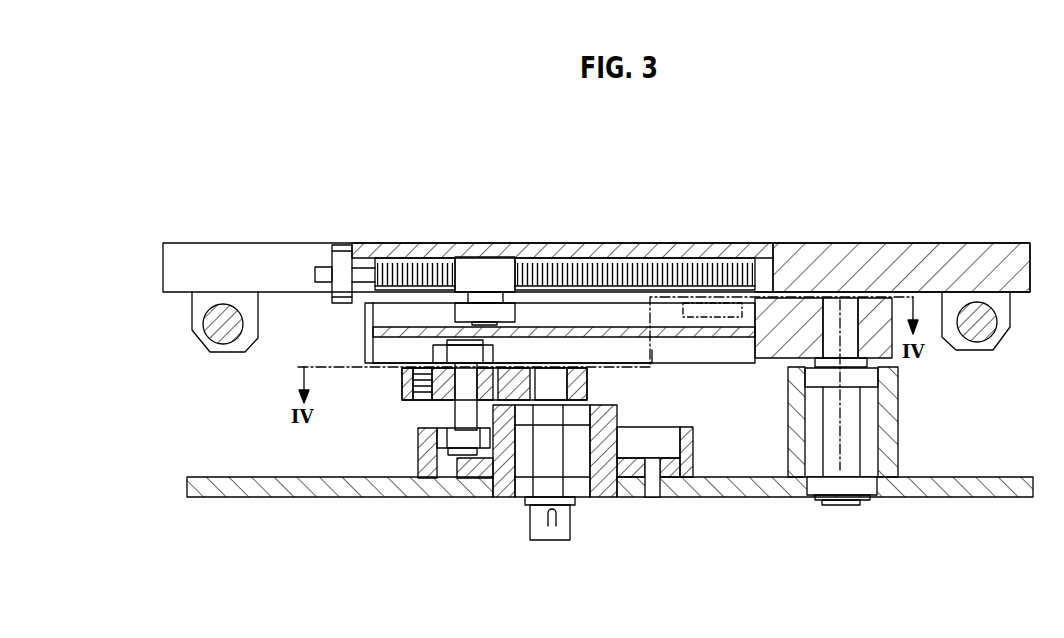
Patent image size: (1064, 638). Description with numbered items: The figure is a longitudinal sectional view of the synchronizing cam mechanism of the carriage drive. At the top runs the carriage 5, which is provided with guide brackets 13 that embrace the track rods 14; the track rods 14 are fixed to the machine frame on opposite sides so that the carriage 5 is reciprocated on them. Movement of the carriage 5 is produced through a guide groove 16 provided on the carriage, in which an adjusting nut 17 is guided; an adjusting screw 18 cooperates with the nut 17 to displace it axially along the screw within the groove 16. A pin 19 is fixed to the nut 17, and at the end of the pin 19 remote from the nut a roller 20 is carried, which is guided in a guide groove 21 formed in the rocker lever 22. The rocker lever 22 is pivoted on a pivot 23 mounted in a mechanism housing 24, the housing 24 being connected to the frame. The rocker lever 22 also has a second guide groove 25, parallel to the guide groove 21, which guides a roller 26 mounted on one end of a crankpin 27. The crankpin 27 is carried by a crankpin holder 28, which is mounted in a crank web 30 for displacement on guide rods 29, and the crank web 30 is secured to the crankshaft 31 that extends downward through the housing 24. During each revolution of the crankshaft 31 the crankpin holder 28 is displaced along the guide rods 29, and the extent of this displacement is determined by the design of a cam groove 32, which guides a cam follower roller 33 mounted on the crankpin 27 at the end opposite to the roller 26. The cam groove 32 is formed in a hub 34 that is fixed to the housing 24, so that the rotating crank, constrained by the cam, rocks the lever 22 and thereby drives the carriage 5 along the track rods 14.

The carriage 5 is at (273, 253).
The guide brackets 13 is at (192, 328).
The track rods 14 is at (233, 343).
The guide groove 16 is at (765, 258).
The adjusting nut 17 is at (480, 255).
The adjusting screw 18 is at (586, 257).
The pin 19 is at (492, 302).
The roller 20 is at (457, 310).
The guide groove 21 is at (378, 313).
The rocker lever 22 is at (772, 346).
The pivot 23 is at (847, 506).
The mechanism housing 24 is at (1006, 486).
The second guide groove 25 is at (378, 348).
The roller 26 is at (481, 352).
The crankpin 27 is at (460, 415).
The crankpin holder 28 is at (438, 395).
The guide rods 29 is at (415, 383).
The crank web 30 is at (582, 383).
The crankshaft 31 is at (572, 513).
The cam groove 32 is at (650, 440).
The cam follower roller 33 is at (442, 440).
The hub 34 is at (683, 469).